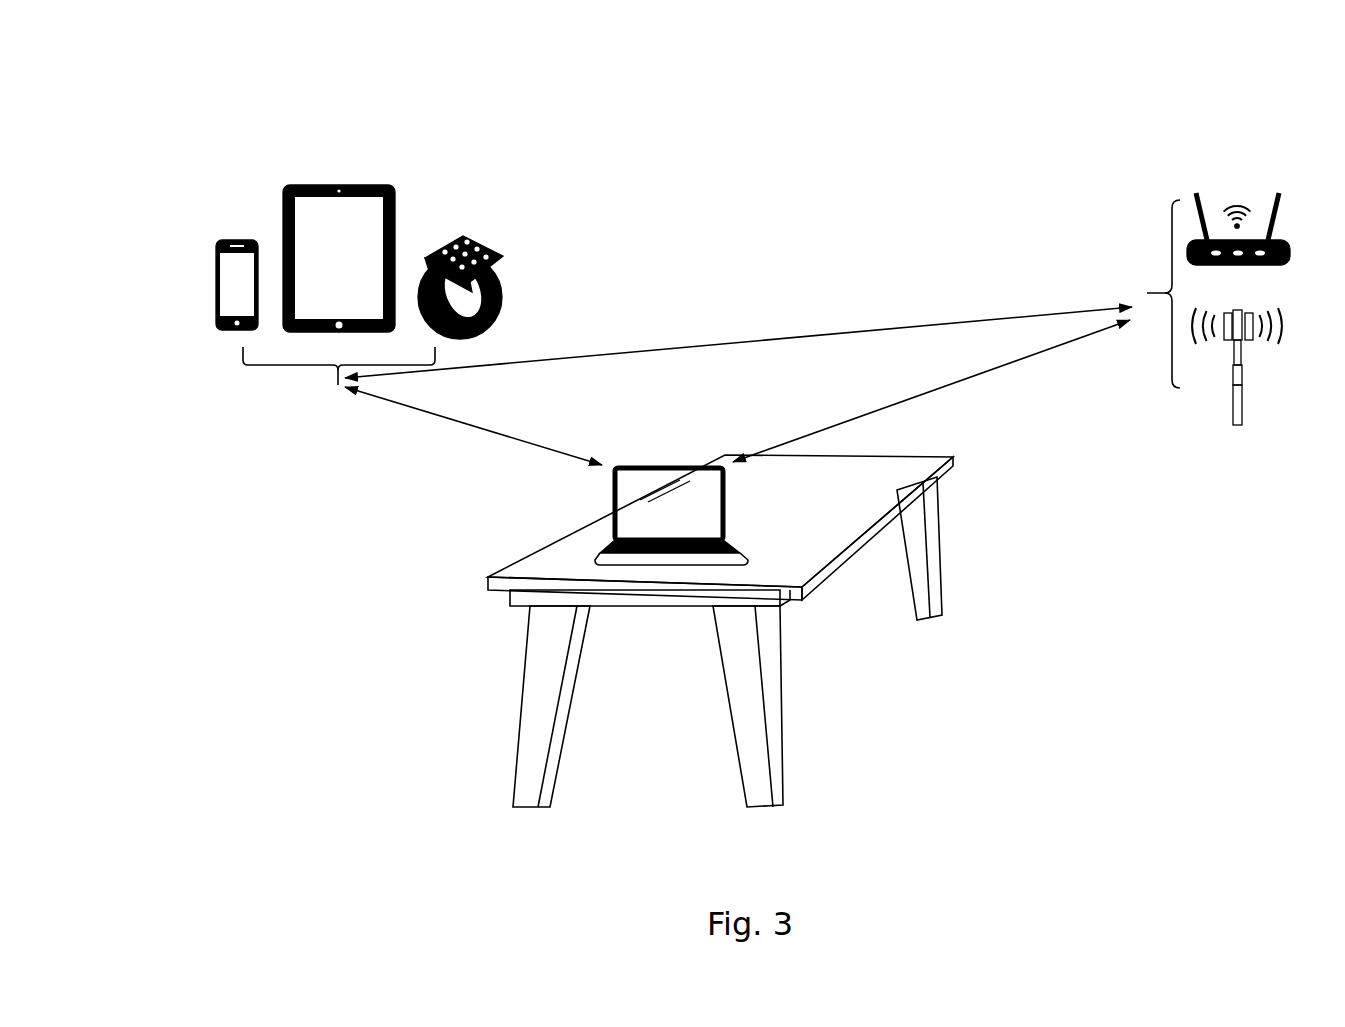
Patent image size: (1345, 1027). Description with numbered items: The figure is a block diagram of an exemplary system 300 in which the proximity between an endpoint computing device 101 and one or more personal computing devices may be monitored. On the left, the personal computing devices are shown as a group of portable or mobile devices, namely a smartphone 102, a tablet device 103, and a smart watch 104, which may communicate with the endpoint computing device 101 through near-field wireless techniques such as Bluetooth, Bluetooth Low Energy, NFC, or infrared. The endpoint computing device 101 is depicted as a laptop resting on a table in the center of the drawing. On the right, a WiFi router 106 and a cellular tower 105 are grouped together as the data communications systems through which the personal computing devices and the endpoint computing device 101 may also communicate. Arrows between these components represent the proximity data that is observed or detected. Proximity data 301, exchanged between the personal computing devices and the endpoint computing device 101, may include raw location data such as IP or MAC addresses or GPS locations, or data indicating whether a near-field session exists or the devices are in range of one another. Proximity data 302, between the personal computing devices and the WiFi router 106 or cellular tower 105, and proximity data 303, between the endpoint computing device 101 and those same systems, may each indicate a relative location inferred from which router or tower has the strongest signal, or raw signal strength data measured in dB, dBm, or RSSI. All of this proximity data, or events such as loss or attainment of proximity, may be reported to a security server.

The system 300 is at (772, 47).
The endpoint computing device 101 is at (728, 515).
The smartphone 102 is at (207, 265).
The tablet device 103 is at (268, 218).
The smart watch 104 is at (513, 265).
The cellular tower 105 is at (1243, 432).
The WiFi router 106 is at (1237, 185).
The proximity data 301 is at (380, 475).
The proximity data 302 is at (850, 300).
The proximity data 303 is at (1027, 455).